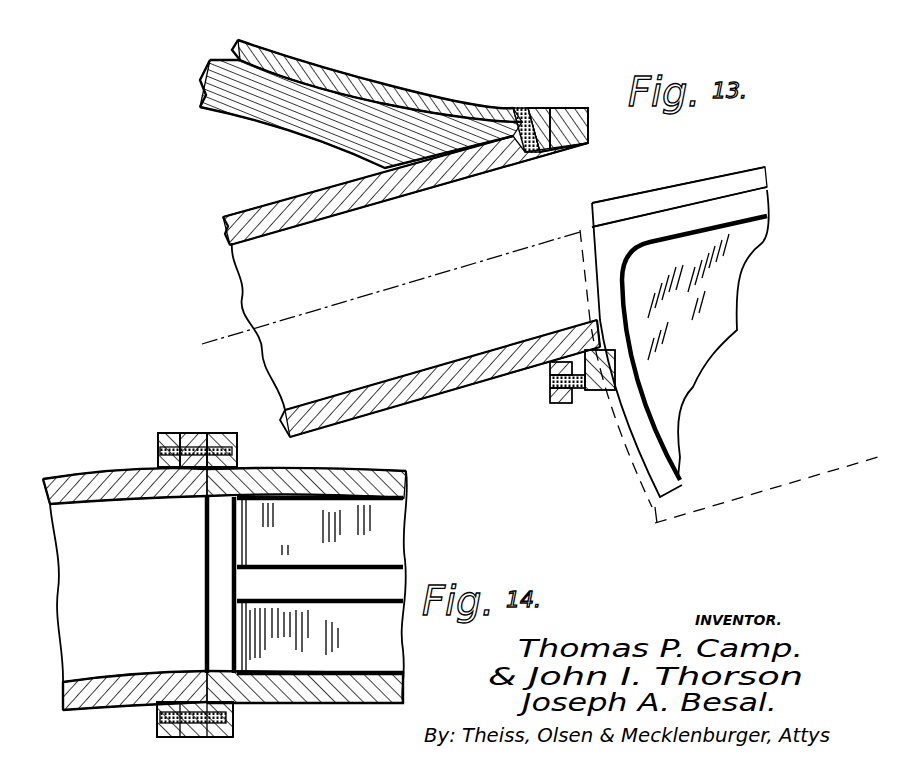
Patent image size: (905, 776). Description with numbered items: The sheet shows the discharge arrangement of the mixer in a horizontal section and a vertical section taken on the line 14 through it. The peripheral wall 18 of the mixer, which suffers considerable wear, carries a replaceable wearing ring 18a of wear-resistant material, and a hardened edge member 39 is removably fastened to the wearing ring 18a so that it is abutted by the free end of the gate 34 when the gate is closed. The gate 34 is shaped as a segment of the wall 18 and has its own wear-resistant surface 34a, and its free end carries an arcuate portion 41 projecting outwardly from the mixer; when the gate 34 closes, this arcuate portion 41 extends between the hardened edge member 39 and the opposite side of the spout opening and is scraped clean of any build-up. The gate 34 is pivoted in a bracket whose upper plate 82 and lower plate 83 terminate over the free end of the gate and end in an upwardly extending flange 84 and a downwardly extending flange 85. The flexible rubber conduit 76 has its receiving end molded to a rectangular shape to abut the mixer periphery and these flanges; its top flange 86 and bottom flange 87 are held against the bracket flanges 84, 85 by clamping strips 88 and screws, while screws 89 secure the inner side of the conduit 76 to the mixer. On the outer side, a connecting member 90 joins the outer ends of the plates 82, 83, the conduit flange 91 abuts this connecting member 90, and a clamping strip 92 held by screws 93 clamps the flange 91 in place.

In FIG. 13, the wall 18 is at (275, 103).
In FIG. 13, the wearing ring 18a is at (364, 82).
In FIG. 13, the screws 89 is at (522, 107).
In FIG. 13, the hardened edge member 39 is at (565, 108).
In FIG. 13, the gate member 34 is at (722, 300).
In FIG. 14, the gate member 34 is at (380, 556).
In FIG. 13, the wear-resistant surface 34a is at (698, 184).
In FIG. 13, the arcuate portion 41 is at (646, 428).
In FIG. 14, the arcuate portion 41 is at (230, 545).
In FIG. 13, the section line 14— 14 is at (238, 362).
In FIG. 13, the conduit 76 is at (446, 394).
In FIG. 14, the conduit 76 is at (73, 481).
In FIG. 13, the screws 93 is at (550, 366).
In FIG. 13, the clamping strip 92 is at (558, 402).
In FIG. 13, the flange 91 is at (578, 390).
In FIG. 13, the connecting member 90 is at (608, 392).
In FIG. 14, the clamping strips 88 is at (168, 433).
In FIG. 14, the top flange 86 is at (190, 433).
In FIG. 14, the upwardly extending flange 84 is at (232, 433).
In FIG. 14, the upper plate 82 is at (359, 471).
In FIG. 14, the bottom flange 87 is at (157, 727).
In FIG. 14, the downwardly extending flange 85 is at (231, 721).
In FIG. 14, the lower plate 83 is at (402, 704).